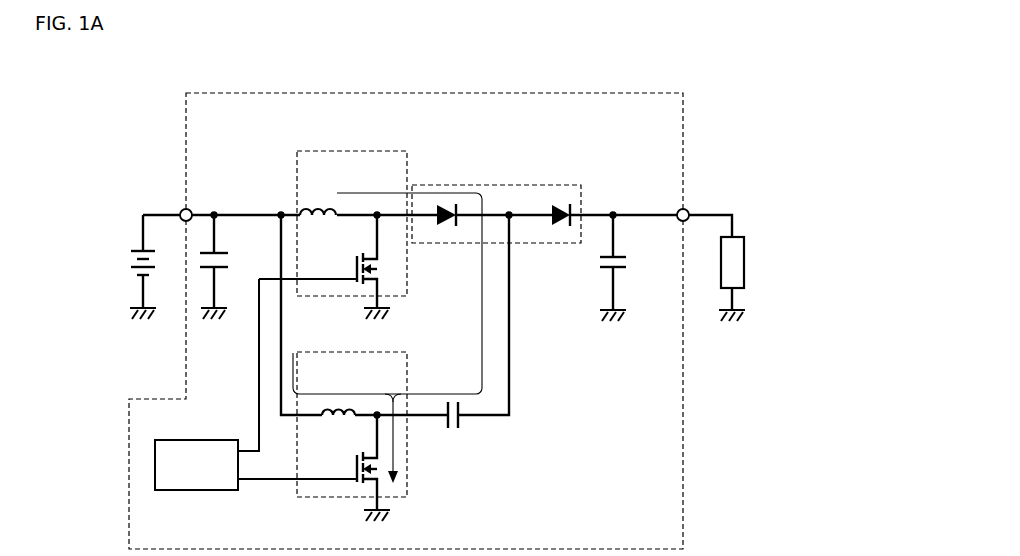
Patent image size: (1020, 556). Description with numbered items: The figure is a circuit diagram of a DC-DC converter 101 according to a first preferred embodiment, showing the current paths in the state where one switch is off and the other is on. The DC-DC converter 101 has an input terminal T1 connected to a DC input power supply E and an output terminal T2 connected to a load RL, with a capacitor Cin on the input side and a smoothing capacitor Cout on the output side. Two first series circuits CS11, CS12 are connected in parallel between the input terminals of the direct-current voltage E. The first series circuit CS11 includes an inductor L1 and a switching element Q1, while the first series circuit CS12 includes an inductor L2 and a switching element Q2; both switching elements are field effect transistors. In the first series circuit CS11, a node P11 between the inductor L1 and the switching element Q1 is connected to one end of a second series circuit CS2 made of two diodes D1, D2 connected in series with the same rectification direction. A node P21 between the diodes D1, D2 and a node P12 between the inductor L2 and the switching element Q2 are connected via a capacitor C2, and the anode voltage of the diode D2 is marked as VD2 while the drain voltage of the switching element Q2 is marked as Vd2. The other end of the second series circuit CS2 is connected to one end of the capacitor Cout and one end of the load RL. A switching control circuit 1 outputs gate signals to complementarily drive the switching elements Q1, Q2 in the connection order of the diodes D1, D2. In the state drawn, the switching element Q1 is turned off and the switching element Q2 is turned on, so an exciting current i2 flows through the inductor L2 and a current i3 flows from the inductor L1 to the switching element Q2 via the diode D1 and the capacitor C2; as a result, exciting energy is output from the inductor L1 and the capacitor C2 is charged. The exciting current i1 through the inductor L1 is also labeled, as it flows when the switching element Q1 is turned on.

The DC-DC converter 101 is at (683, 93).
The switching control circuit 1 is at (205, 440).
The input terminal T1 is at (173, 207).
The output terminal T2 is at (694, 207).
The DC input power supply E is at (133, 267).
The capacitor Cin is at (229, 265).
The capacitor Cout is at (633, 266).
The load RL is at (745, 262).
The inductor L1 is at (318, 200).
The inductor L2 is at (337, 400).
The switching element Q1 is at (324, 267).
The switching element Q2 is at (314, 468).
The diode D1 is at (450, 203).
The diode D2 is at (561, 203).
The capacitor C2 is at (450, 398).
The node P11 is at (377, 205).
The node P12 is at (377, 405).
The node P21 is at (509, 205).
The first series circuit CS11 is at (386, 151).
The first series circuit CS12 is at (393, 352).
The second series circuit CS2 is at (583, 185).
The exciting current i1 is at (399, 263).
The exciting current i2 is at (360, 387).
The current i3 is at (387, 338).
The anode voltage of the diode D2 VD2 is at (533, 206).
The drain voltage of the switching element Q2 Vd2 is at (354, 437).